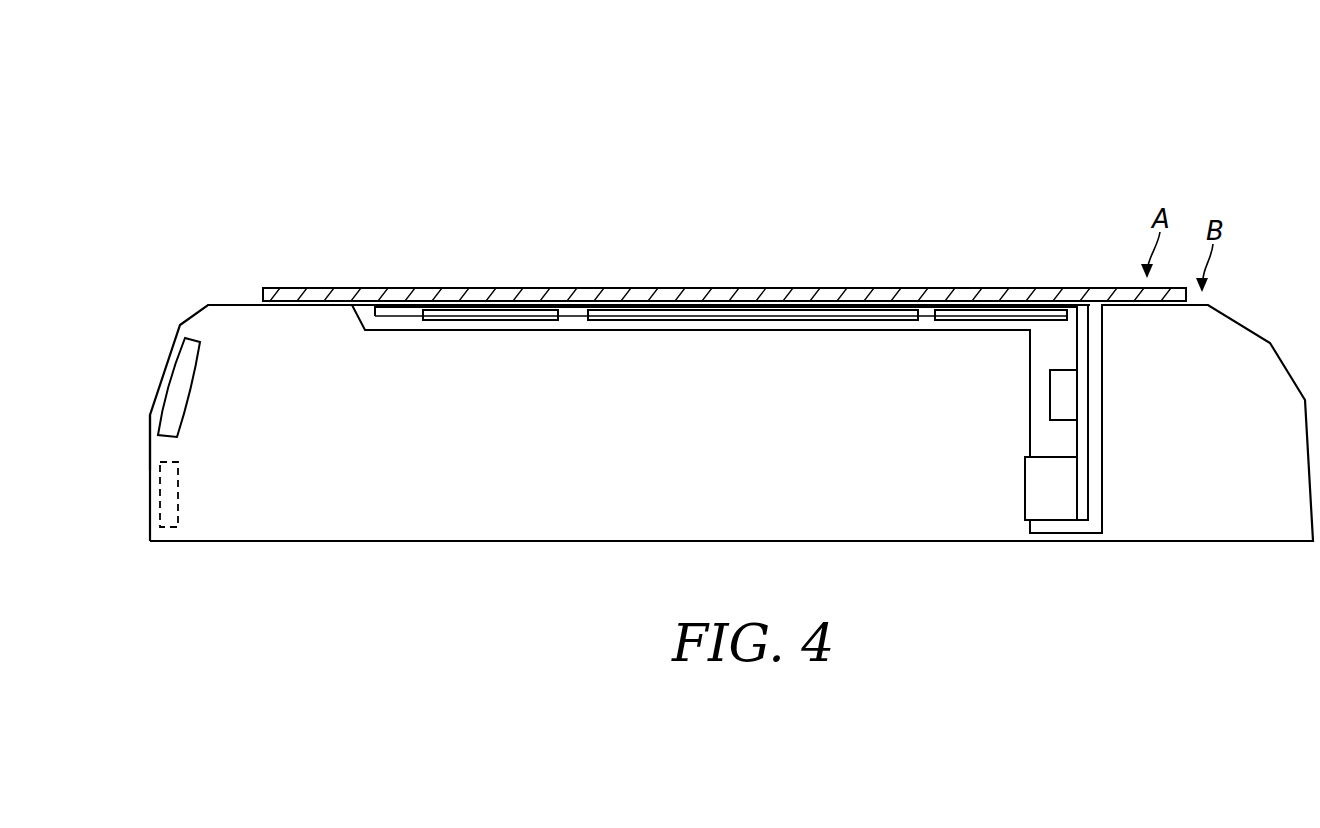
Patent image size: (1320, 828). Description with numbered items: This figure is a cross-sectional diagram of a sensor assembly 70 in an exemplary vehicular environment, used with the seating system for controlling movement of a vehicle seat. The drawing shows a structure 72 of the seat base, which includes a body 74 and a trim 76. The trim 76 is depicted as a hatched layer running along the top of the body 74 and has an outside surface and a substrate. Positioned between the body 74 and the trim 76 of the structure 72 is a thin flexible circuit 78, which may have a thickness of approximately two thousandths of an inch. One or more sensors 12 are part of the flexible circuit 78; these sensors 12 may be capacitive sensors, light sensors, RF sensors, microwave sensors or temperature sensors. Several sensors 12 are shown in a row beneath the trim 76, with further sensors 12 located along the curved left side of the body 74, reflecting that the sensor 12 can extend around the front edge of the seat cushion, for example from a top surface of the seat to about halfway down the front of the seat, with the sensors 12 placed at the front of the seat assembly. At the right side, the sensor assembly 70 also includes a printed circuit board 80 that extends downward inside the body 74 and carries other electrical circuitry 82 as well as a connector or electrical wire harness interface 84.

The sensor assembly 70 is at (172, 137).
The structure 72 is at (166, 304).
The body 74 is at (163, 448).
The trim 76 is at (765, 287).
The flexible circuit 78 is at (398, 328).
The printed circuit board 80 is at (1108, 316).
The electrical circuitry 82 is at (1050, 403).
The connector or electrical wire harness interface 84 is at (1025, 492).
The sensor 12 is at (464, 321).